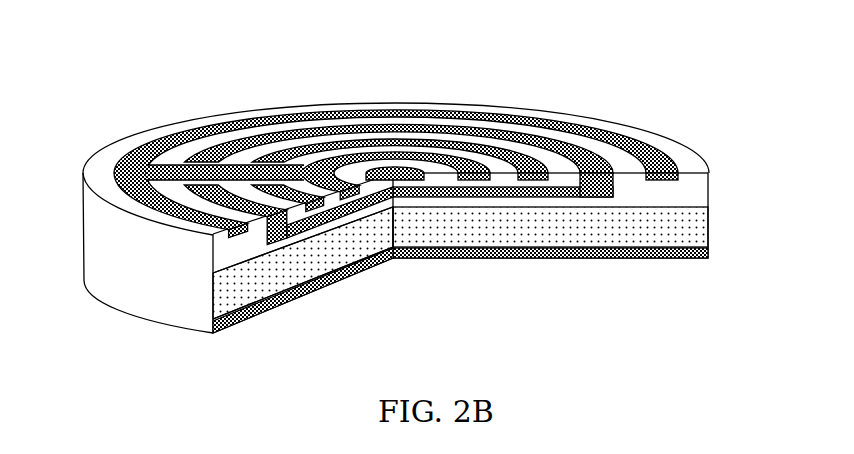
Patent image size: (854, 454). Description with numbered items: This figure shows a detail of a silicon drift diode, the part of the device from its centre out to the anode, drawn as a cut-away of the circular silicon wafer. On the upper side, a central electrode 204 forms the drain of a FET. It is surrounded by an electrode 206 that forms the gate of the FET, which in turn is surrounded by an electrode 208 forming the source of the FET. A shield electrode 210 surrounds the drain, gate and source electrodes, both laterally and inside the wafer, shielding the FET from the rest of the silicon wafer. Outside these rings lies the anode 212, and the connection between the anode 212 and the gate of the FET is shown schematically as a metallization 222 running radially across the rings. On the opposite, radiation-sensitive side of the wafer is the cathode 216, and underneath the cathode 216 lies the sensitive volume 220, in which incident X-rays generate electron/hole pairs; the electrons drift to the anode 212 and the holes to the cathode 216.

The central electrode 204 is at (383, 173).
The electrode 206 is at (460, 173).
The electrode 208 is at (532, 173).
The shield electrode 210 is at (590, 173).
The anode 212 is at (657, 179).
The cathode 216 is at (507, 258).
The sensitive volume 220 is at (297, 273).
The metallization 222 is at (177, 172).